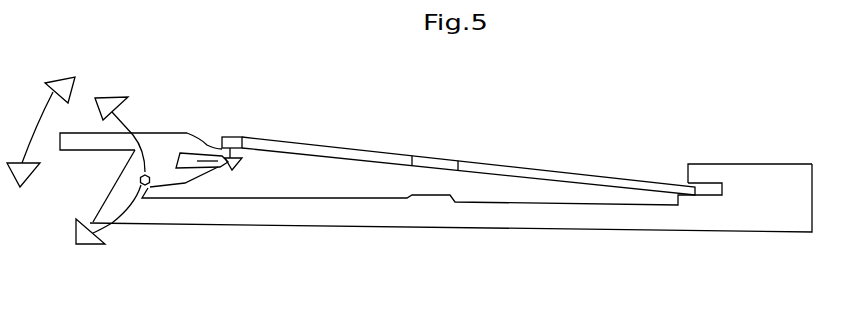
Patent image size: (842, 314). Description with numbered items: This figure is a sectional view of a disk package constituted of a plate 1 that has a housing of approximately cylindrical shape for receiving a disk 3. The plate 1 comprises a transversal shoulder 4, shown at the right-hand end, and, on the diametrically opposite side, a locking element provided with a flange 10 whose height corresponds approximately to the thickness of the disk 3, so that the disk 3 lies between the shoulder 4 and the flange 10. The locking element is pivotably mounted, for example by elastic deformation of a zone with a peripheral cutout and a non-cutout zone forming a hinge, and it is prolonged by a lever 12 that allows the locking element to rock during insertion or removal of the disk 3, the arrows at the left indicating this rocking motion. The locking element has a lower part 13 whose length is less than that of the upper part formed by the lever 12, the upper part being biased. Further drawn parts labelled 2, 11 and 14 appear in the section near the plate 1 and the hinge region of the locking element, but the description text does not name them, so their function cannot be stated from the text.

The plate 1 is at (792, 220).
The lower plate 2 is at (607, 205).
The disk 3 is at (538, 167).
The transversal shoulder 4 is at (712, 177).
The flange 10 is at (232, 172).
The arm 11 is at (185, 133).
The lever 12 is at (100, 150).
The lower part 13 is at (208, 172).
The pivot 14 is at (220, 146).